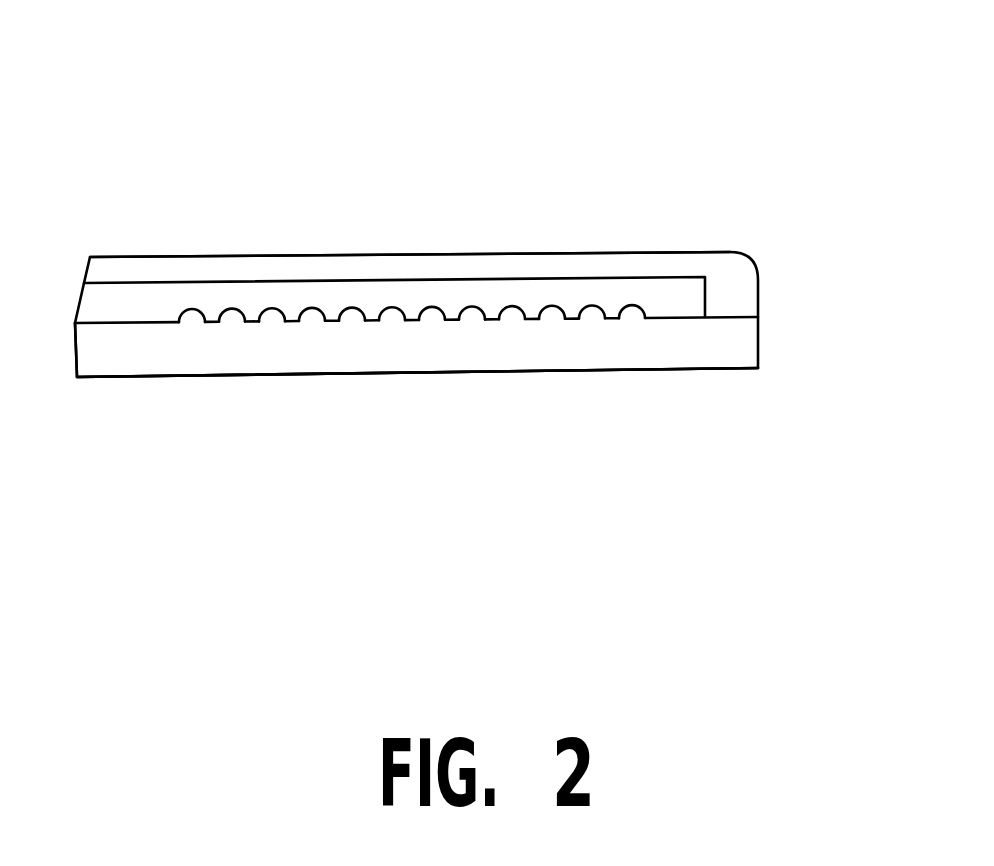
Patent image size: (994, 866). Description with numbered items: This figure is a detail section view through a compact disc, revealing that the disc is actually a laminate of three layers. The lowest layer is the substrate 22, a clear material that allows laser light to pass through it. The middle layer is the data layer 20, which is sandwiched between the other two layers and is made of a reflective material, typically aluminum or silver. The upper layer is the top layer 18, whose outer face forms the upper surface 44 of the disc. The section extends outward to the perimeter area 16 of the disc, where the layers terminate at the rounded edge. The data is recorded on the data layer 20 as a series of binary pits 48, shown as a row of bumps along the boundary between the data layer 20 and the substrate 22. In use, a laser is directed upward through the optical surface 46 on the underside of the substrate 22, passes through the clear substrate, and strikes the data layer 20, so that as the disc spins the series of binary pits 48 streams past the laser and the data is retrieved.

The perimeter area 16 is at (728, 245).
The top layer 18 is at (100, 272).
The data layer 20 is at (100, 303).
The substrate 22 is at (245, 350).
The upper surface 44 is at (555, 252).
The optical surface 46 is at (530, 372).
The pit 48 is at (388, 308).